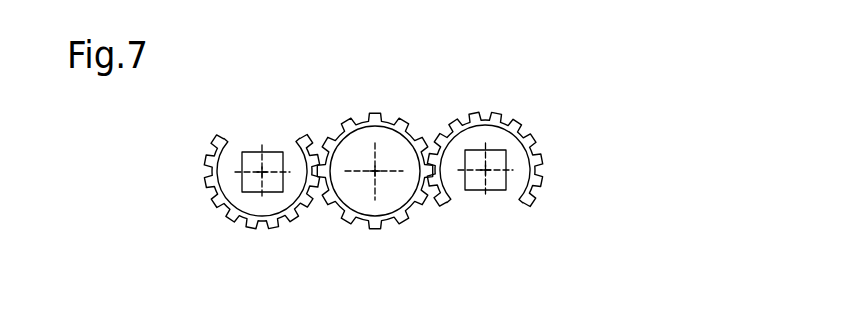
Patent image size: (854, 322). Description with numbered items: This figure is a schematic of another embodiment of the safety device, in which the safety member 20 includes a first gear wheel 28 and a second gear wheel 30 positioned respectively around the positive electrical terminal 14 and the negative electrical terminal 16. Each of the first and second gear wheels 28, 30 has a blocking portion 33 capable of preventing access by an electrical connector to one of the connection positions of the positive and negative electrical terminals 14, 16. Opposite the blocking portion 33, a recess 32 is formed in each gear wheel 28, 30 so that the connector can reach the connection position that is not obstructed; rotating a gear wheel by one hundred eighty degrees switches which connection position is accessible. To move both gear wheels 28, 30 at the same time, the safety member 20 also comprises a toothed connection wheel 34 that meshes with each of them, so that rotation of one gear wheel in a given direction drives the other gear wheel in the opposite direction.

The positive electrical terminal 14 is at (252, 162).
The negative electrical terminal 16 is at (506, 156).
The safety member 20 is at (260, 65).
The first gear wheel 28 is at (208, 160).
The second gear wheel 30 is at (540, 142).
The recess 32 is at (281, 131).
The blocking portion 33 is at (457, 120).
The toothed connection wheel 34 is at (398, 115).